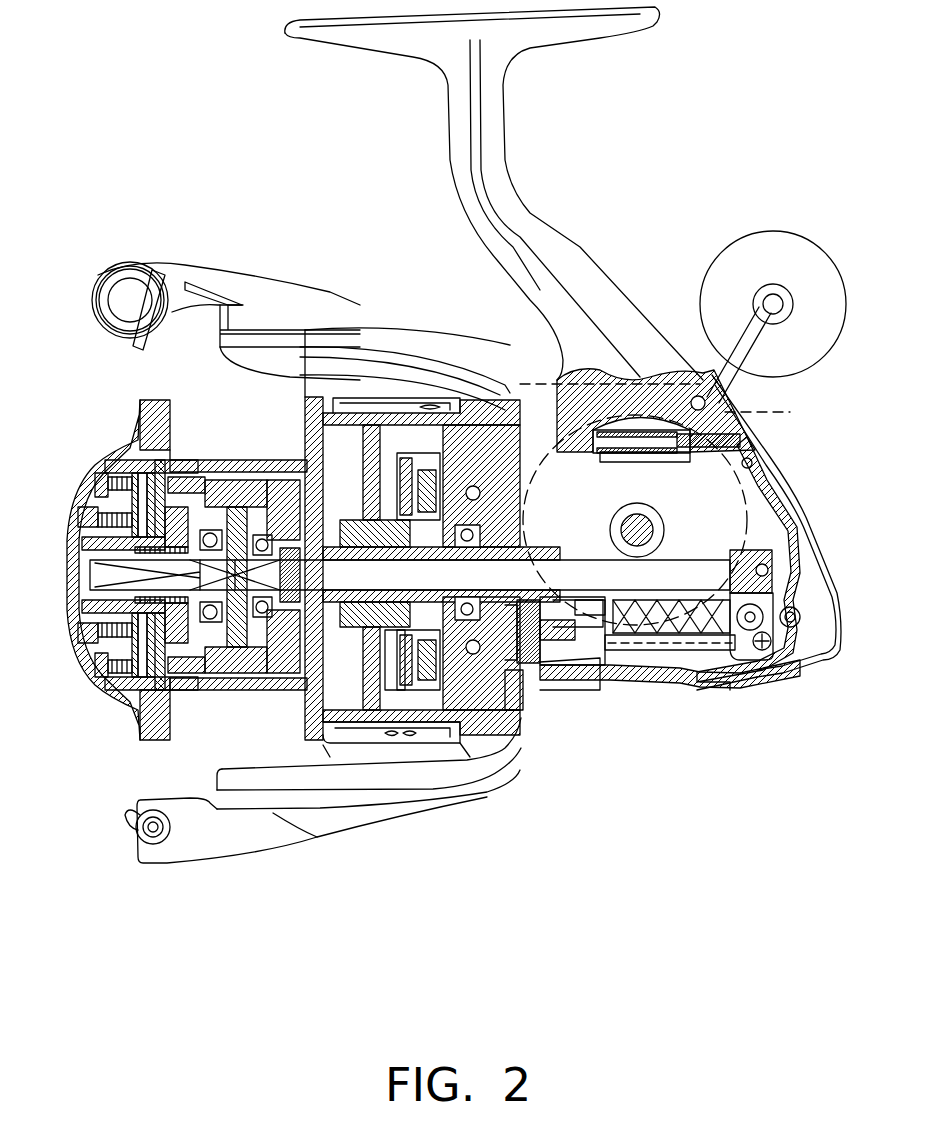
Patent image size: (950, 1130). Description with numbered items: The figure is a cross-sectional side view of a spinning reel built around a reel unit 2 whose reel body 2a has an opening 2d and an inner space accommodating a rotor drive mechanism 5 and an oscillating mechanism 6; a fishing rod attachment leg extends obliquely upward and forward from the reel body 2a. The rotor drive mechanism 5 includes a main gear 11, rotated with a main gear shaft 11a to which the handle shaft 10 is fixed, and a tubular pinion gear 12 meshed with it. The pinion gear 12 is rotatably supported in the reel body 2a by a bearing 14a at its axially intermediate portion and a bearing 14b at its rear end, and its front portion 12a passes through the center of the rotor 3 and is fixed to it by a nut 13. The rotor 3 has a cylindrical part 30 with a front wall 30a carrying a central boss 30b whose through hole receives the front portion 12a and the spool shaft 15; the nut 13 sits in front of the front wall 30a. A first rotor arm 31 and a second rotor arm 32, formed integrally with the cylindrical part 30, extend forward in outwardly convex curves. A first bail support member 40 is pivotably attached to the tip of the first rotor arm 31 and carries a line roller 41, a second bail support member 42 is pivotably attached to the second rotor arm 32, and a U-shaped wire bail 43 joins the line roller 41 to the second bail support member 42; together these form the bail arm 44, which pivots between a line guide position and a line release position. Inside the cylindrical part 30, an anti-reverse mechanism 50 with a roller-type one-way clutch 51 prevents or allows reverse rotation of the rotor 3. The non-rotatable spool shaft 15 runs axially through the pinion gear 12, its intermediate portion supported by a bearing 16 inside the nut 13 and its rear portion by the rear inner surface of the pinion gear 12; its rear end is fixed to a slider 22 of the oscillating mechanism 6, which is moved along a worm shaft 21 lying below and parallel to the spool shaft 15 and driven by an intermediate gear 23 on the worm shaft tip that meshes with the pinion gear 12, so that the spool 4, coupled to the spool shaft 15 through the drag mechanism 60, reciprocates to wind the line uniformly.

The reel unit 2 is at (630, 258).
The reel body 2a is at (660, 372).
The opening 2d is at (764, 292).
The rotor 3 is at (405, 285).
The spool 4 is at (229, 440).
The rotor drive mechanism 5 is at (765, 510).
The oscillating mechanism 6 is at (722, 648).
The handle shaft 10 is at (676, 527).
The main gear 11 is at (745, 430).
The main gear shaft 11a is at (625, 505).
The pinion gear 12 is at (558, 528).
The front portion 12a is at (392, 690).
The nut 13 is at (335, 440).
The bearing 14a is at (527, 660).
The bearing 14b is at (605, 618).
The spool shaft 15 is at (673, 575).
The bearing 16 is at (315, 637).
The worm shaft 21 is at (770, 632).
The slider 22 is at (750, 655).
The intermediate gear 23 is at (533, 658).
The cylindrical part 30 is at (407, 413).
The front wall 30a is at (363, 690).
The boss 30b is at (400, 690).
The first rotor arm 31 is at (355, 325).
The second rotor arm 32 is at (395, 815).
The first bail support member 40 is at (200, 266).
The line roller 41 is at (118, 266).
The second bail support member 42 is at (228, 862).
The bail 43 is at (128, 820).
The bail arm 44 is at (88, 335).
The anti-reverse mechanism 50 is at (425, 455).
The one-way clutch 51 is at (480, 522).
The drag mechanism 60 is at (220, 640).